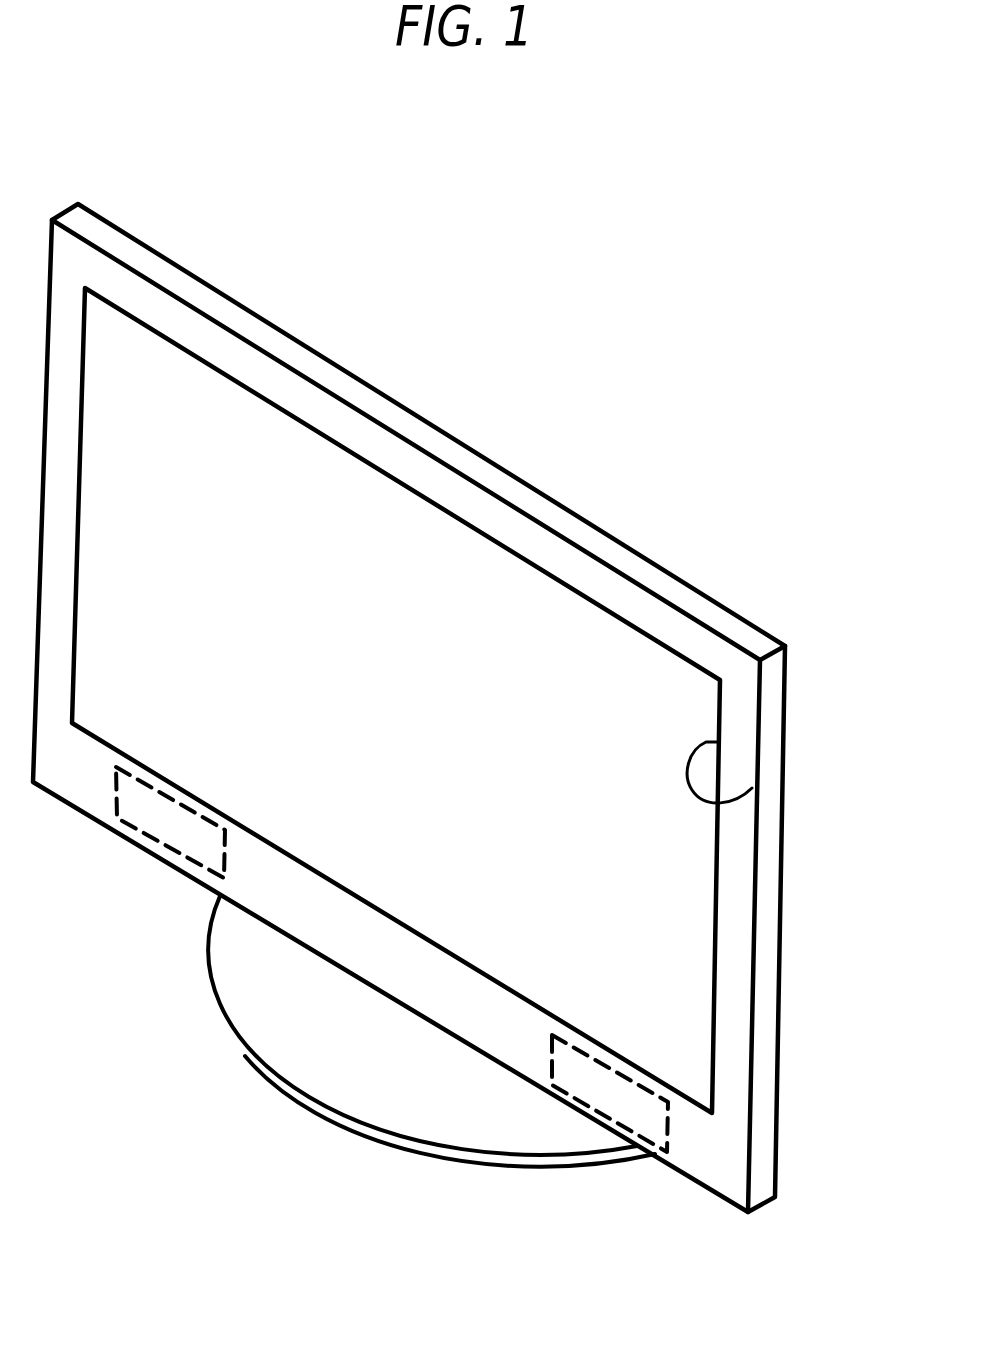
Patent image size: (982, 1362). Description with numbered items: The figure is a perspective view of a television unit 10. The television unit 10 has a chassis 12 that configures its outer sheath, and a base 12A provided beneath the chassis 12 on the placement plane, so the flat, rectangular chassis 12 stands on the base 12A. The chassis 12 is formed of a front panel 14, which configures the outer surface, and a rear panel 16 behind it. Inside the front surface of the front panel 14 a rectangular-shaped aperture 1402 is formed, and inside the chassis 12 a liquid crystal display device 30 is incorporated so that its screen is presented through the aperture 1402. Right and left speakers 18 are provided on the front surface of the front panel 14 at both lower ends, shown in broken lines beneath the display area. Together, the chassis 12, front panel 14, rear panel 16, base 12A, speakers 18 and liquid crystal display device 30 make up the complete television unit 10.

The television unit 10 is at (638, 298).
The chassis 12 is at (262, 325).
The base 12A is at (347, 1072).
The front panel 14 is at (528, 527).
The rear panel 16 is at (697, 592).
The speakers 18 is at (170, 827).
The liquid crystal display device 30 is at (397, 533).
The aperture 1402 is at (752, 788).